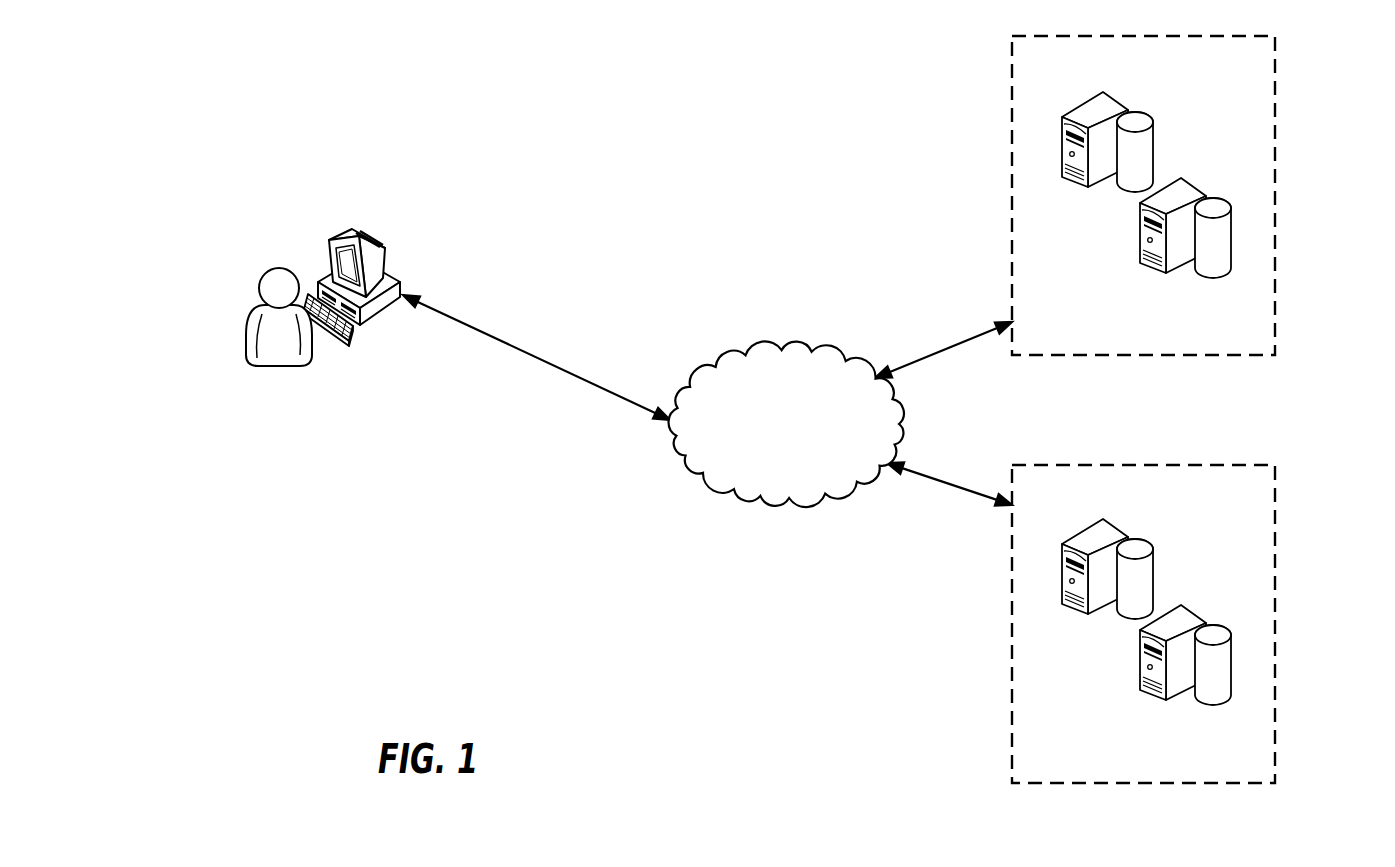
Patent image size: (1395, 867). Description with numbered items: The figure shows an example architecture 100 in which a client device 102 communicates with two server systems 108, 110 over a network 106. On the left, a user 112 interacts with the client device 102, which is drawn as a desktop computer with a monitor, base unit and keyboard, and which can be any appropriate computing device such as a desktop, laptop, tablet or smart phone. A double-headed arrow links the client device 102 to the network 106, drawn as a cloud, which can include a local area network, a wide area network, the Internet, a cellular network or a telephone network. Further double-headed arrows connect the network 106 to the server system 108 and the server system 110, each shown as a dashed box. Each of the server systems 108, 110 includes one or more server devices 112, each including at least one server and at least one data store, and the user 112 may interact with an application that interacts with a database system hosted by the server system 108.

The example architecture 100 is at (638, 113).
The client device 102 is at (329, 240).
The network 106 is at (782, 349).
The server system 108 is at (1275, 195).
The server system 110 is at (1275, 620).
The server device 112 is at (264, 366).